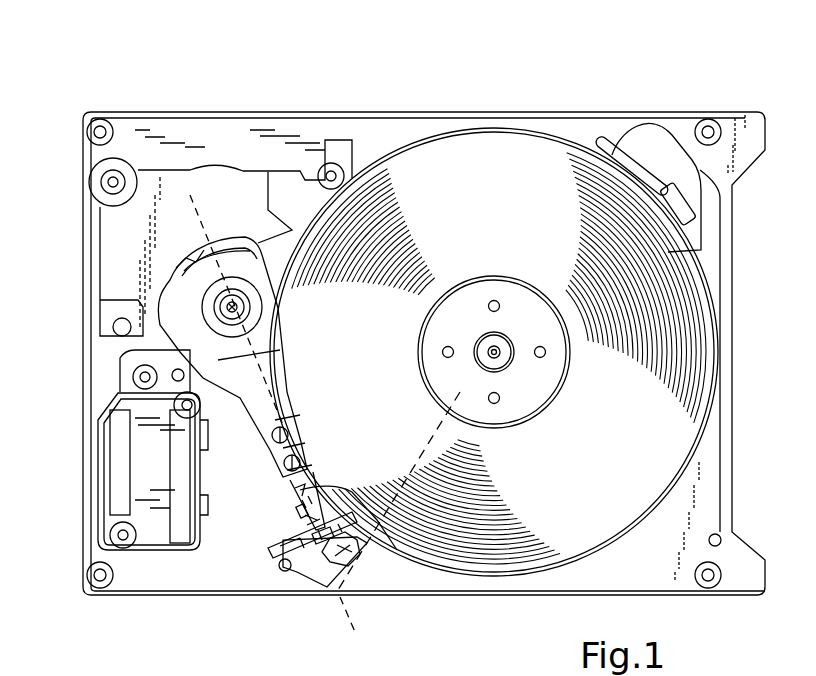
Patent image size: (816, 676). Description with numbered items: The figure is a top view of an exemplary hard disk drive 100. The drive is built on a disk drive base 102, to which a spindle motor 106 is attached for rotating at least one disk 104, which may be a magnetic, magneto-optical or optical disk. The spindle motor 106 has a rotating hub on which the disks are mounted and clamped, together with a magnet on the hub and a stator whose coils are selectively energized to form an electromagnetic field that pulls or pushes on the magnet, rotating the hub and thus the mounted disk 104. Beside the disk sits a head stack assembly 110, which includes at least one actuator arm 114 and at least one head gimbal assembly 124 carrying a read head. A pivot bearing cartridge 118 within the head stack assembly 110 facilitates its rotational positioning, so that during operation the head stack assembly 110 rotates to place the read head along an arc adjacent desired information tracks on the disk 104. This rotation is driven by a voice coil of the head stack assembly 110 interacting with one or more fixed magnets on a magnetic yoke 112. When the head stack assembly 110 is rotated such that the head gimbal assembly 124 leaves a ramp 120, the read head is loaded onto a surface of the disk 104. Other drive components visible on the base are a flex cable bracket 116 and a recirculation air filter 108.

The hard disk drive 100 is at (360, 76).
The disk drive base 102 is at (722, 480).
The disk 104 is at (491, 146).
The spindle motor 106 is at (512, 298).
The recirculation air filter 108 is at (640, 165).
The head stack assembly 110 is at (180, 352).
The magnetic yoke 112 is at (240, 197).
The actuator arm 114 is at (270, 425).
The flex cable bracket 116 is at (150, 490).
The pivot bearing cartridge 118 is at (220, 315).
The ramp 120 is at (302, 563).
The head gimbal assembly 124 is at (300, 490).